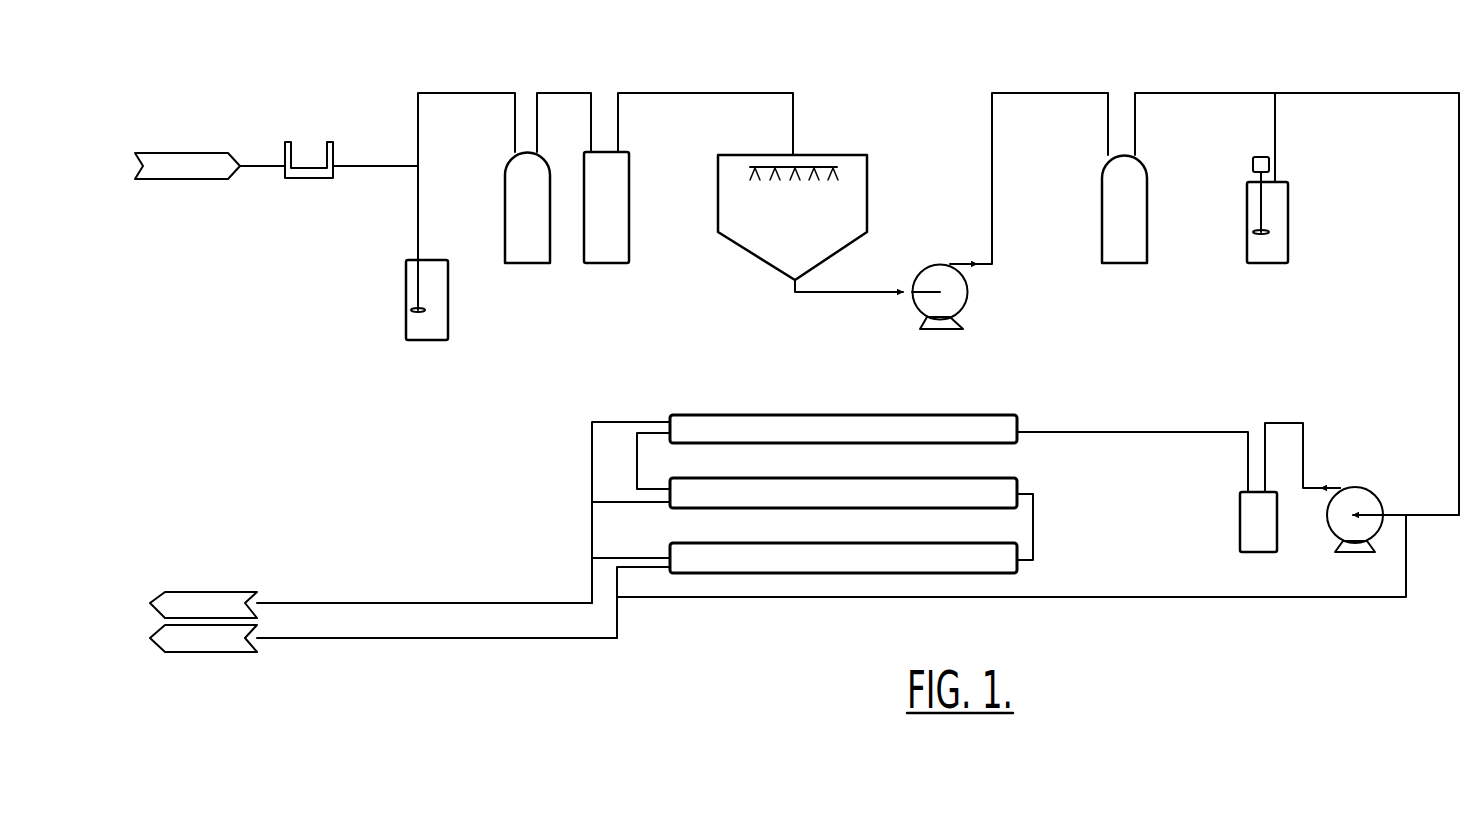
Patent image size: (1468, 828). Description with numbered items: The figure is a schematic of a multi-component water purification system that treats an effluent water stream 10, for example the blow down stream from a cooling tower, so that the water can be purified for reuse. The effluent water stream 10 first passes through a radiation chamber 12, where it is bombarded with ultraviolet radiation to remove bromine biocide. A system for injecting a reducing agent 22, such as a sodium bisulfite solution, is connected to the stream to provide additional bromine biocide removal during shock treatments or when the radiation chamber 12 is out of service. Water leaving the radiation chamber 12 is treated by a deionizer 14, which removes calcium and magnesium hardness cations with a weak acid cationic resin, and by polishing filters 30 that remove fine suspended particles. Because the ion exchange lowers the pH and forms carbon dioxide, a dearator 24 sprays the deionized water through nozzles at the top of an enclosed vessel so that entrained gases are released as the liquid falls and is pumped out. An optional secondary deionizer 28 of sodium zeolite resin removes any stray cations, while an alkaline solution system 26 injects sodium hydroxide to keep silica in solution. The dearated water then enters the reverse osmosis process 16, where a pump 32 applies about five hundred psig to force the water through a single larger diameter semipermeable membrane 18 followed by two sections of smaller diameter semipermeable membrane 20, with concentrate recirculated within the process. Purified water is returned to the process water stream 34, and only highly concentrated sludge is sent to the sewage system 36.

The effluent water stream 10 is at (197, 152).
The radiation chamber 12 is at (303, 158).
The deionizer 14 is at (530, 265).
The reverse osmosis process 16 is at (902, 461).
The semipermeable membrane 18 is at (1020, 438).
The semipermeable membrane 20 is at (965, 557).
The system for injecting a reducing agent 22 is at (406, 336).
The dearator 24 is at (867, 196).
The alkaline solution system 26 is at (1278, 226).
The secondary deionizer 28 is at (1120, 265).
The polishing filters 30 is at (610, 265).
The pump 32 is at (1373, 502).
The process water stream 34 is at (210, 592).
The sewage system 36 is at (210, 652).